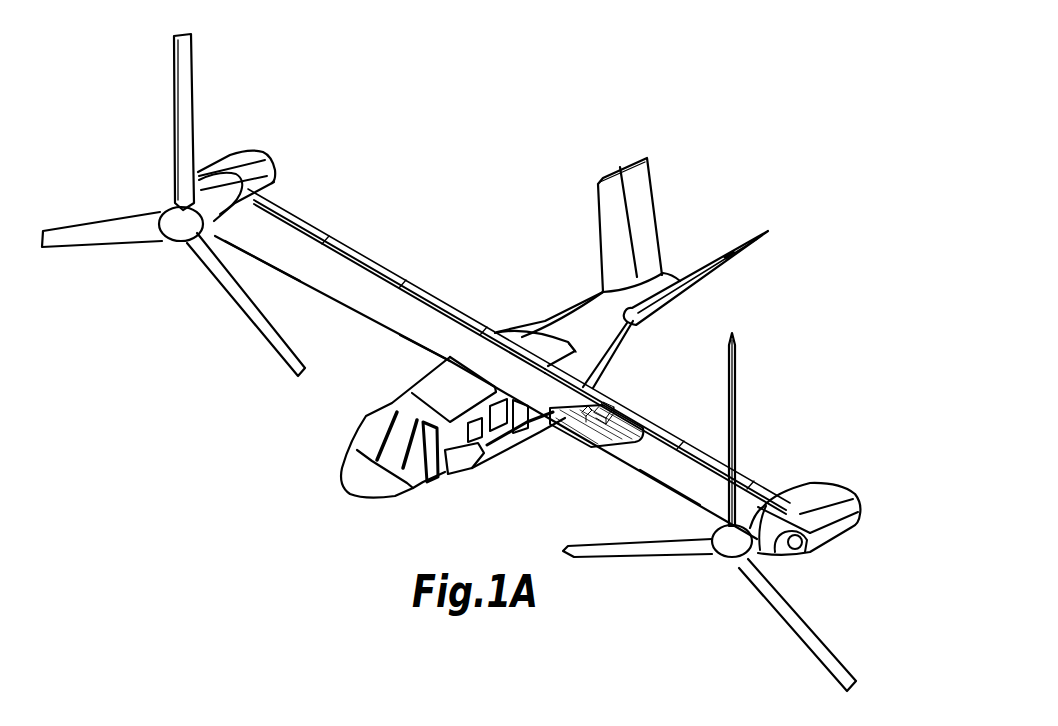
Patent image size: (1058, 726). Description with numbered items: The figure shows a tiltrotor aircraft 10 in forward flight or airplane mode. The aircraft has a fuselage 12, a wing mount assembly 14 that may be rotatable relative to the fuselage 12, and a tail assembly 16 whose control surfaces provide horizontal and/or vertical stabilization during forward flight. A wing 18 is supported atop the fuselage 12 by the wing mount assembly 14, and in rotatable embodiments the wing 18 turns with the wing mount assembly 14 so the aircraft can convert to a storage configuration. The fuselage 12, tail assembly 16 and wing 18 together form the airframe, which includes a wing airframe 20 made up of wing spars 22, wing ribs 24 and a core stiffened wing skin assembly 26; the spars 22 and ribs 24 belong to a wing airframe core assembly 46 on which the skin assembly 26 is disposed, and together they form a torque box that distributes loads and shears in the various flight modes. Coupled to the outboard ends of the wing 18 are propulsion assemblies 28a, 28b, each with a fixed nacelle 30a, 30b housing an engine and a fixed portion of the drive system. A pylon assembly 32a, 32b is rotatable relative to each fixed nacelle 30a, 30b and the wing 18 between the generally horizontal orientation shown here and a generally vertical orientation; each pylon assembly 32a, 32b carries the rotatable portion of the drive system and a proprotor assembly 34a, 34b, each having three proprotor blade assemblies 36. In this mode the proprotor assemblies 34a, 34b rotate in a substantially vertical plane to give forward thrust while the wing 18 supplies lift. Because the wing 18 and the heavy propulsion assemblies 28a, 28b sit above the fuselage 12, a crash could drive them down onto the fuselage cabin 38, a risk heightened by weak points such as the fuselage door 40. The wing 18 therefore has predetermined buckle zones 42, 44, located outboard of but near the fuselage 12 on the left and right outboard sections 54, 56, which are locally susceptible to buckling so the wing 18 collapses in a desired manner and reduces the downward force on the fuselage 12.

The tiltrotor aircraft 10 is at (503, 206).
The fuselage 12 is at (582, 313).
The wing mount assembly 14 is at (525, 333).
The tail assembly 16 is at (668, 207).
The wing 18 is at (307, 256).
The wing airframe 20 is at (356, 286).
The wing spars 22 is at (637, 420).
The wing ribs 24 is at (602, 417).
The core stiffened wing skin assembly 26 is at (703, 481).
The propulsion assembly 28a is at (827, 474).
The propulsion assembly 28b is at (265, 147).
The fixed nacelle 30a is at (856, 502).
The fixed nacelle 30b is at (251, 151).
The pylon assembly 32a is at (757, 517).
The pylon assembly 32b is at (205, 196).
The proprotor assembly 34a is at (717, 553).
The proprotor assembly 34b is at (168, 241).
The proprotor blade assemblies 36 is at (176, 93).
The fuselage cabin 38 is at (500, 421).
The fuselage door 40 is at (517, 425).
The buckle zone 42 is at (545, 425).
The buckle zone 44 is at (428, 356).
The wing airframe core assembly 46 is at (600, 394).
The left outboard section 54 is at (673, 493).
The right outboard section 56 is at (293, 277).